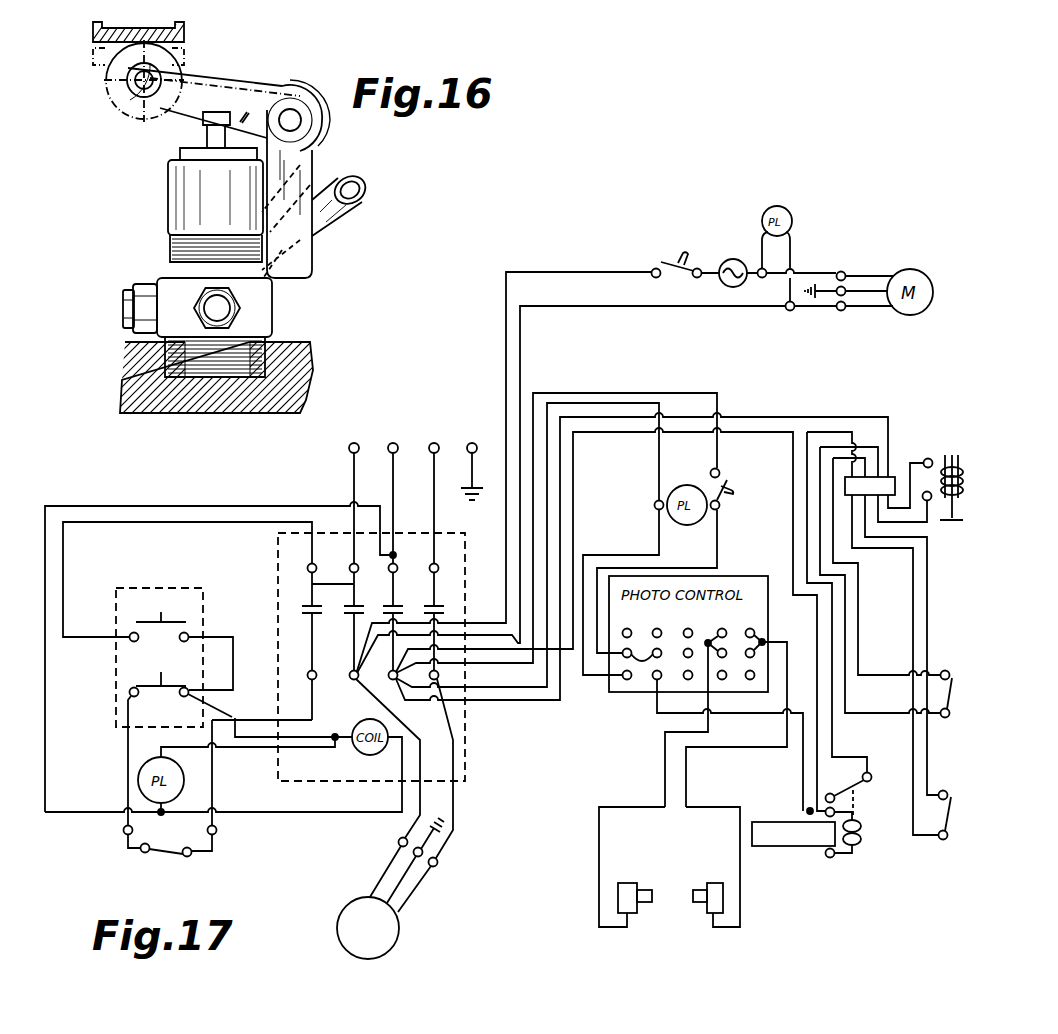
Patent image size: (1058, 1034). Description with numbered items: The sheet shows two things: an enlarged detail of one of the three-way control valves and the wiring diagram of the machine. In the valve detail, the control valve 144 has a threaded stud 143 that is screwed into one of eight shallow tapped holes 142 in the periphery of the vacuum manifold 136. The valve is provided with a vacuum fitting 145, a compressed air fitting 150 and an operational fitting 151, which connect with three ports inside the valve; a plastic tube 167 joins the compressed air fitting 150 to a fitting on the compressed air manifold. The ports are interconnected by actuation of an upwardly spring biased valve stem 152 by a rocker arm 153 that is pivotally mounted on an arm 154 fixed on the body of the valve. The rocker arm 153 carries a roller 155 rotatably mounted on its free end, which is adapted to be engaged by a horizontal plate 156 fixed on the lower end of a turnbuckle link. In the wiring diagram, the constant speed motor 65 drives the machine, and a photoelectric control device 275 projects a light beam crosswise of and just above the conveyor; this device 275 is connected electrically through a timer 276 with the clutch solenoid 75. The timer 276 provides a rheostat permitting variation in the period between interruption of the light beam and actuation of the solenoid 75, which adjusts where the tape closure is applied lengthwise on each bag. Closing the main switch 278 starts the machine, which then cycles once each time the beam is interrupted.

In FIG. 16, the horizontal plate 156 is at (150, 62).
In FIG. 16, the roller 155 is at (126, 78).
In FIG. 16, the rocker arm 153 is at (248, 90).
In FIG. 16, the arm 154 is at (306, 166).
In FIG. 16, the plastic tube 167 is at (346, 209).
In FIG. 16, the valve stem 152 is at (200, 148).
In FIG. 16, the three-way control valve 144 is at (180, 190).
In FIG. 16, the operational fitting 151 is at (170, 262).
In FIG. 16, the compressed air fitting 150 is at (300, 258).
In FIG. 16, the vacuum fitting 145 is at (125, 336).
In FIG. 16, the vacuum manifold 136 is at (298, 366).
In FIG. 16, the threaded stud 143 is at (180, 362).
In FIG. 16, the tapped hole 142 is at (218, 372).
In FIG. 17, the main switch 278 is at (155, 580).
In FIG. 17, the constant speed motor 65 is at (399, 921).
In FIG. 17, the photoelectric control device 275 is at (650, 931).
In FIG. 17, the timer 276 is at (840, 860).
In FIG. 17, the clutch solenoid 75 is at (962, 510).